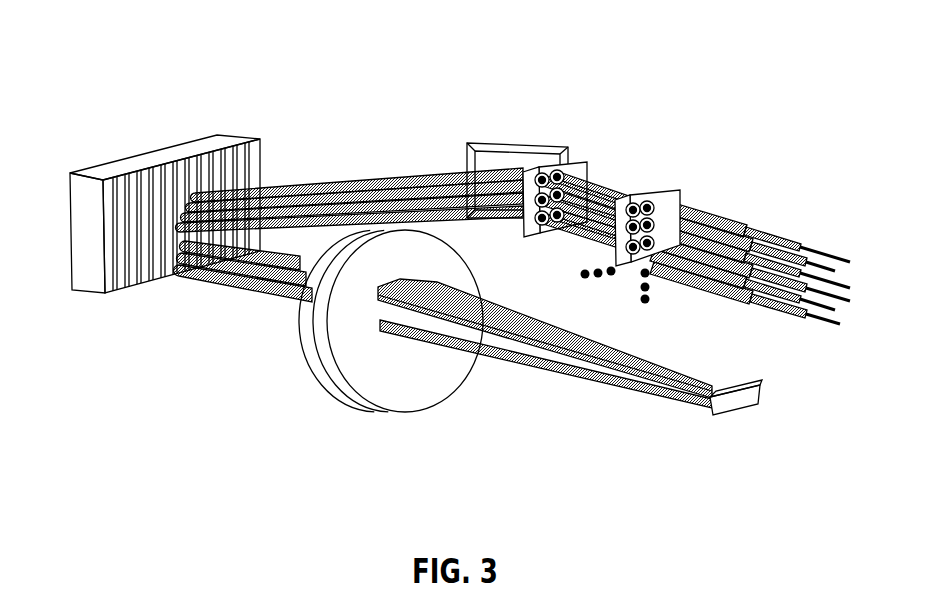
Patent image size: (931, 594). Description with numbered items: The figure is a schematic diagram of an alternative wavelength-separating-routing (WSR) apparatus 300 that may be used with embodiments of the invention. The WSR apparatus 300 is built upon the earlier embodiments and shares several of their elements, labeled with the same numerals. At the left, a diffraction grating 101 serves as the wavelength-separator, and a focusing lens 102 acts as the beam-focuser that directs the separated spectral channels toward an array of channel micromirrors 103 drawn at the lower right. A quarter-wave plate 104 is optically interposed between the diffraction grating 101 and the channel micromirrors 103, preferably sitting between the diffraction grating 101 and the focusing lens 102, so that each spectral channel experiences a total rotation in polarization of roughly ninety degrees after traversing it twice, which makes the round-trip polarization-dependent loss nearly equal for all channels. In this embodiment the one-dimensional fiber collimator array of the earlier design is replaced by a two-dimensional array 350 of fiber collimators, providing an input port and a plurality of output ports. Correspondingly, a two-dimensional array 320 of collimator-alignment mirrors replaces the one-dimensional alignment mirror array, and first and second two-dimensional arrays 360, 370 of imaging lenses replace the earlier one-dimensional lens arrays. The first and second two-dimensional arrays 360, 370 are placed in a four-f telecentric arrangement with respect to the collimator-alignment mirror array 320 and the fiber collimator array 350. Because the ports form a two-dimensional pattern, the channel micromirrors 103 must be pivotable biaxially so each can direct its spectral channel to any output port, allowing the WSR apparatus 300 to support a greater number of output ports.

The WSR apparatus 300 is at (152, 93).
The diffraction grating 101 is at (237, 134).
The focusing lens 102 is at (342, 385).
The channel micromirrors 103 is at (755, 405).
The quarter-wave plate 104 is at (312, 363).
The two-dimensional array of collimator-alignment mirrors 320 is at (531, 132).
The first two-dimensional array of imaging lenses 360 is at (591, 156).
The second two-dimensional array of imaging lenses 370 is at (684, 186).
The two-dimensional array of fiber collimators 350 is at (754, 211).